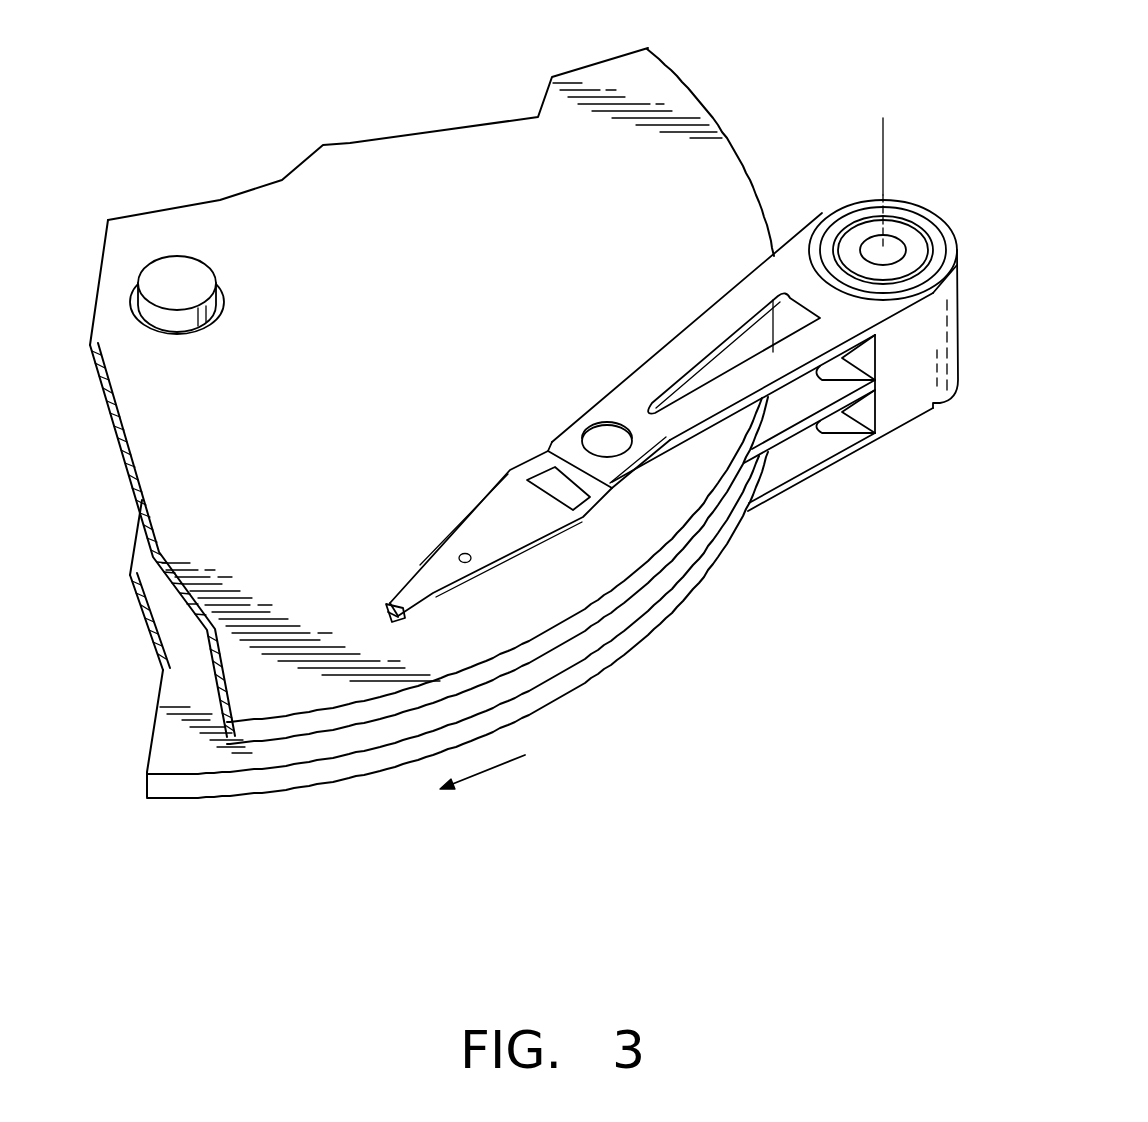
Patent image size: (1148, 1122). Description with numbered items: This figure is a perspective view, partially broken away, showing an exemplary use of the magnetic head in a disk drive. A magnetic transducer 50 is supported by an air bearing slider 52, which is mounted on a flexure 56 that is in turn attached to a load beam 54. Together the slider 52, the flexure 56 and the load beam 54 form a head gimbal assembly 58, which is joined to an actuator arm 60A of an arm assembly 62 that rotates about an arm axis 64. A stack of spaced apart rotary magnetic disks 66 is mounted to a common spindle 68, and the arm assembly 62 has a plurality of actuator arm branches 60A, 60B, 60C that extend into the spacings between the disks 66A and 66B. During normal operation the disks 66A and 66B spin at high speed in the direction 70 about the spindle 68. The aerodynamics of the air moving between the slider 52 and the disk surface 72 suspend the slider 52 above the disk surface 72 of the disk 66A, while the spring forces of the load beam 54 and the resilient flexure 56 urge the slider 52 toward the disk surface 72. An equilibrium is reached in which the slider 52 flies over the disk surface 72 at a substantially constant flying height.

The magnetic transducer 50 is at (378, 620).
The air bearing slider 52 is at (403, 615).
The load beam 54 is at (503, 518).
The flexure 56 is at (388, 600).
The head gimbal assembly 58 is at (491, 509).
The actuator arm 60A is at (657, 362).
The actuator arm branch 60B is at (835, 418).
The actuator arm branch 60C is at (800, 503).
The arm assembly 62 is at (755, 326).
The arm axis 64 is at (883, 150).
The rotary magnetic disks 66 is at (432, 462).
The disk 66A is at (585, 618).
The disk 66B is at (557, 680).
The spindle 68 is at (212, 266).
The direction 70 is at (487, 773).
The disk surface 72 is at (626, 548).